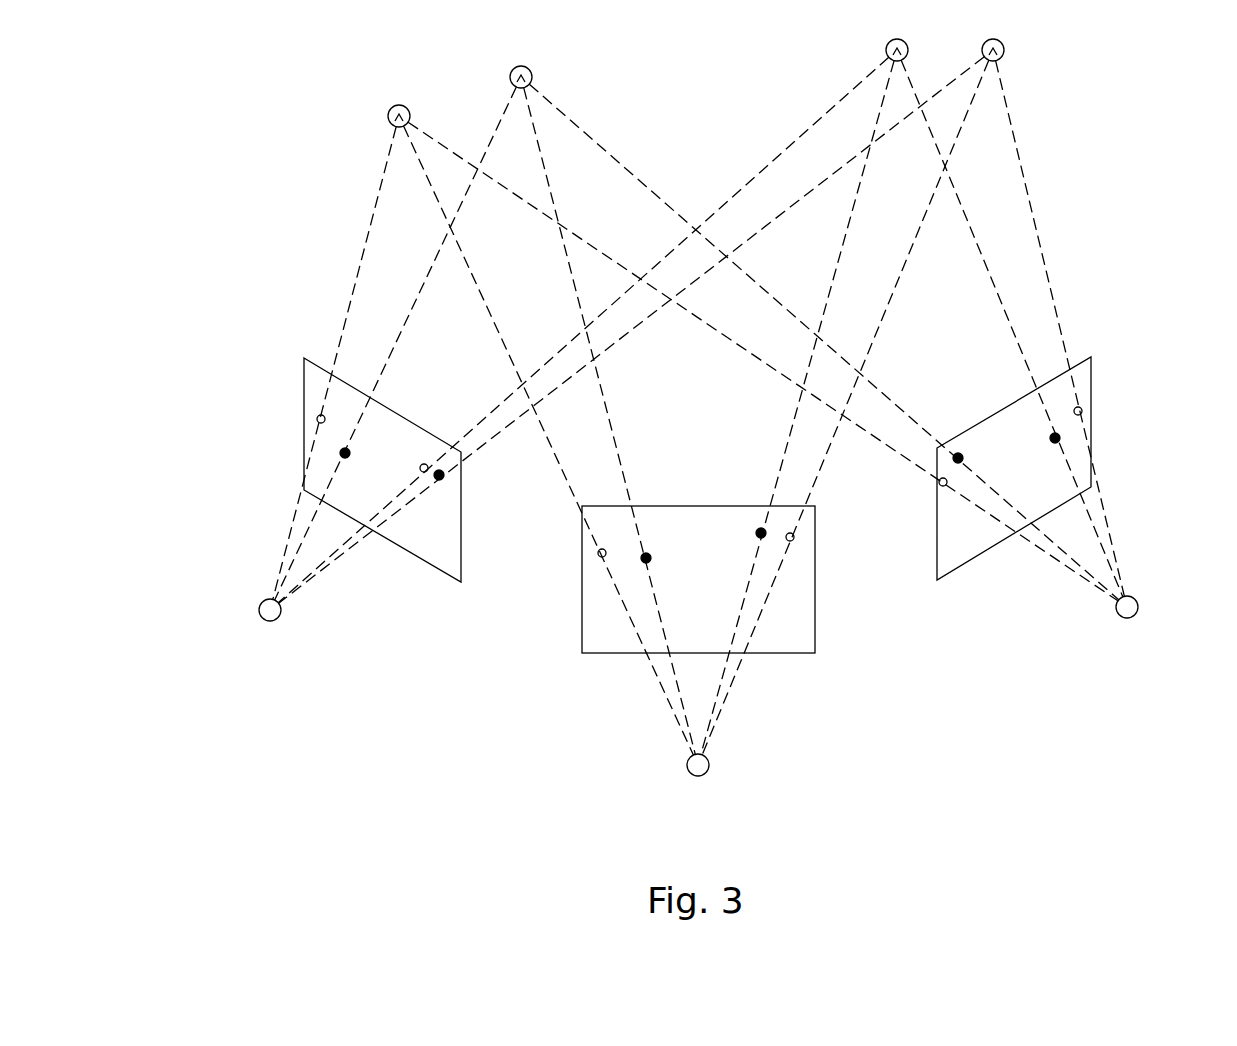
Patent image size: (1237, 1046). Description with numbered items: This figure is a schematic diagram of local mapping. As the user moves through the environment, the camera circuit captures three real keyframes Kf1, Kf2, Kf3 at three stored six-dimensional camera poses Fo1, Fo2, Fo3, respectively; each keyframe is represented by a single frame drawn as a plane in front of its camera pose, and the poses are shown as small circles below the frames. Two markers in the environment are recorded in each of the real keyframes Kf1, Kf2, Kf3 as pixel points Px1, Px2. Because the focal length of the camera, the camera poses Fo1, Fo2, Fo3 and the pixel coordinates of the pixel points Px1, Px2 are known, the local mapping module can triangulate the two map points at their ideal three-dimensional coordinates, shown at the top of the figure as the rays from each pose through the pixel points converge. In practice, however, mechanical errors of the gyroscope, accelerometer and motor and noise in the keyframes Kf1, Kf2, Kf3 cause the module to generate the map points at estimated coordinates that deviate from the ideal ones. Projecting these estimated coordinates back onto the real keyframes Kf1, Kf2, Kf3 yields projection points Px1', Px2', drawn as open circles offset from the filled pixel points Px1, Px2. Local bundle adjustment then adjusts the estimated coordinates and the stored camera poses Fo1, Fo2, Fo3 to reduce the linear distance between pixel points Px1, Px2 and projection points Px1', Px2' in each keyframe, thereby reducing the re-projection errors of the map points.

The camera pose Fo1 is at (1147, 625).
The camera pose Fo2 is at (709, 784).
The camera pose Fo3 is at (258, 630).
The real keyframe Kf1 is at (1091, 373).
The real keyframe Kf2 is at (815, 627).
The real keyframe Kf3 is at (305, 452).
The pixel point Px1 is at (727, 487).
The projection point Px1' is at (789, 476).
The pixel point Px2 is at (658, 490).
The projection point Px2' is at (599, 482).